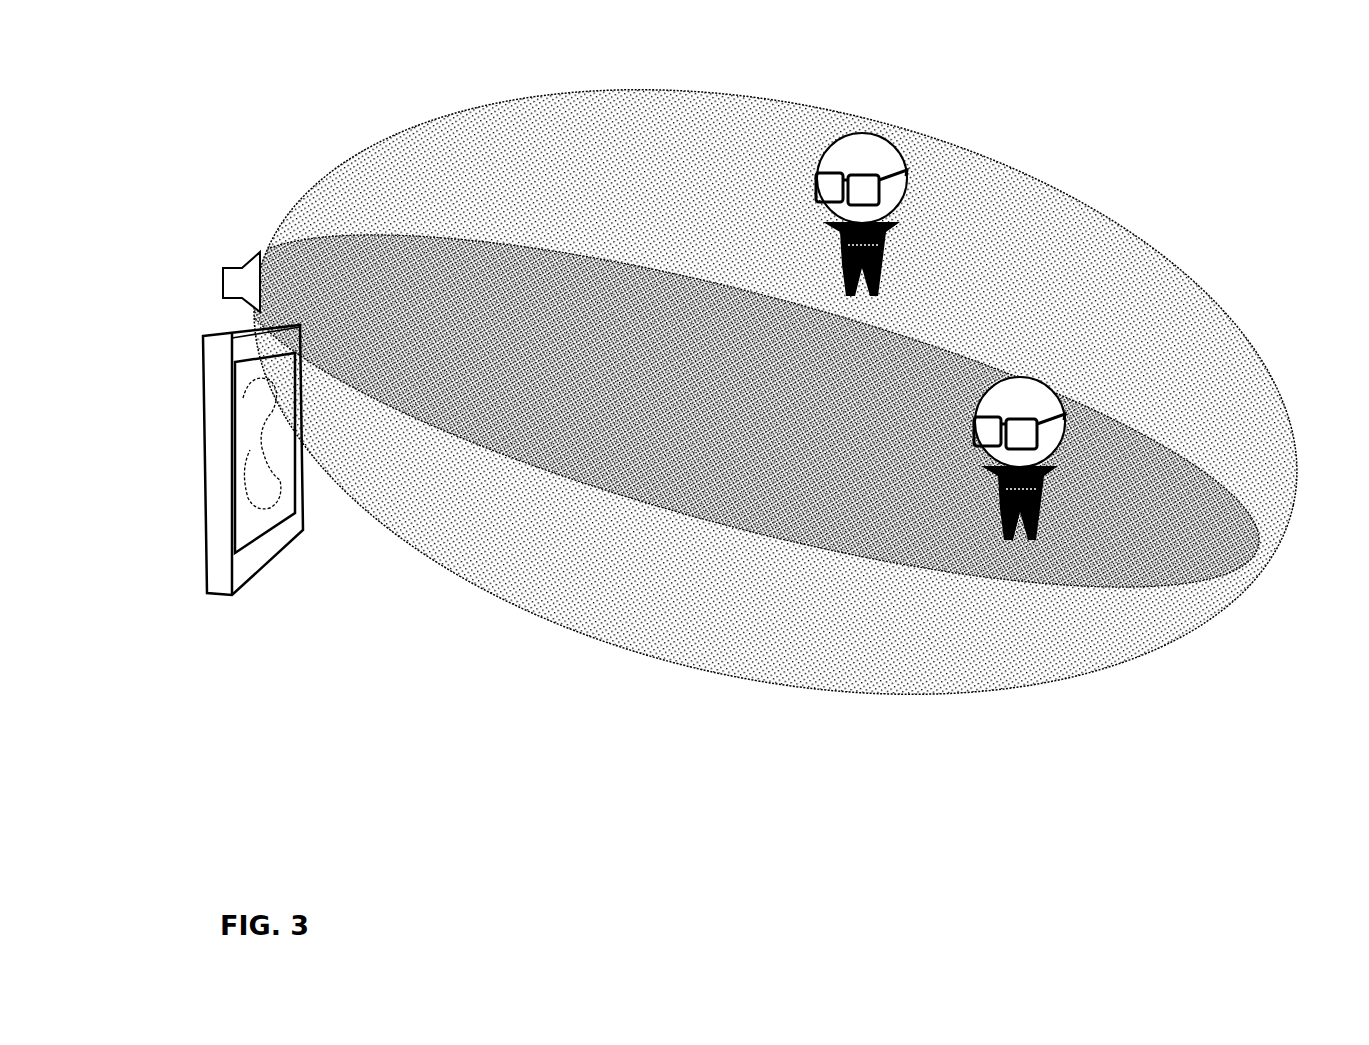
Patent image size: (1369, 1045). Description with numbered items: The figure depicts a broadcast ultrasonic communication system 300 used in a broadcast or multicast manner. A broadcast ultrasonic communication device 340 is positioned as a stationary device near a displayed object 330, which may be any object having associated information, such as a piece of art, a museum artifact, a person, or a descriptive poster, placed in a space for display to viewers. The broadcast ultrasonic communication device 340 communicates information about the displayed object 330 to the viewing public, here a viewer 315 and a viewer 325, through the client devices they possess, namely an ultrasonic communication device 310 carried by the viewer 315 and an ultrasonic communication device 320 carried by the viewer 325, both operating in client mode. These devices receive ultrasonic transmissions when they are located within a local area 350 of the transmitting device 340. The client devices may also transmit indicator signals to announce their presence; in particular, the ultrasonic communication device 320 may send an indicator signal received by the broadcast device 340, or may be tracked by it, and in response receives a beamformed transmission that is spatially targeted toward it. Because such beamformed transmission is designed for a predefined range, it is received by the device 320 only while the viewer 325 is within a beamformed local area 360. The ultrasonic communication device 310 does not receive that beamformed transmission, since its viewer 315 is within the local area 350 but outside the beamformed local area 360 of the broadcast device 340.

The broadcast ultrasonic communication system 300 is at (763, 465).
The ultrasonic communication device 310 is at (893, 135).
The viewer 315 is at (901, 214).
The ultrasonic communication device 320 is at (1063, 513).
The viewer 325 is at (1058, 458).
The displayed object 330 is at (203, 568).
The broadcast ultrasonic communication device 340 is at (243, 256).
The local area 350 is at (583, 110).
The beamformed local area 360 is at (500, 420).